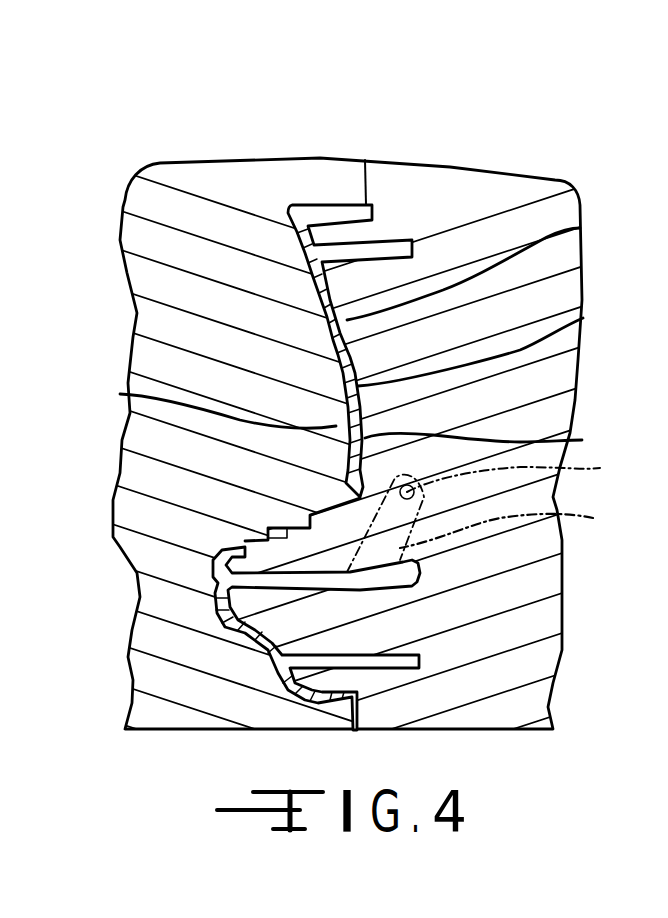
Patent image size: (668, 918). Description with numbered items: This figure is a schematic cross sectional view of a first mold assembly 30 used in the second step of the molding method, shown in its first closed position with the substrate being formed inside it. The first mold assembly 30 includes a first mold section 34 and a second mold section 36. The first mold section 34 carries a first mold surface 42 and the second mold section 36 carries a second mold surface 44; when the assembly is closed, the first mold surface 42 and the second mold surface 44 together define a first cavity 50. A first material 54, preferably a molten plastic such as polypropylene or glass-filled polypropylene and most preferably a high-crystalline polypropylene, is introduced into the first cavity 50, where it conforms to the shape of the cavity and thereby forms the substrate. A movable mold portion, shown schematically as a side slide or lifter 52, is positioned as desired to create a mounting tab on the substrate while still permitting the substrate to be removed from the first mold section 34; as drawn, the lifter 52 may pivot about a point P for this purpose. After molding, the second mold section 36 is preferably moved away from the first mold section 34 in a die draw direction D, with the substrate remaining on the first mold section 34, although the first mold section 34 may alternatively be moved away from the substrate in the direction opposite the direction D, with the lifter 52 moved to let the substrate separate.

The first mold assembly 30 is at (470, 110).
The first mold section 34 is at (507, 198).
The second mold section 36 is at (205, 217).
The first mold surface 42 is at (583, 318).
The second mold surface 44 is at (118, 395).
The first cavity 50 is at (582, 440).
The lifter 52 is at (593, 518).
The first material 54 is at (580, 228).
The pivot point P is at (593, 470).
The die draw direction D is at (350, 495).